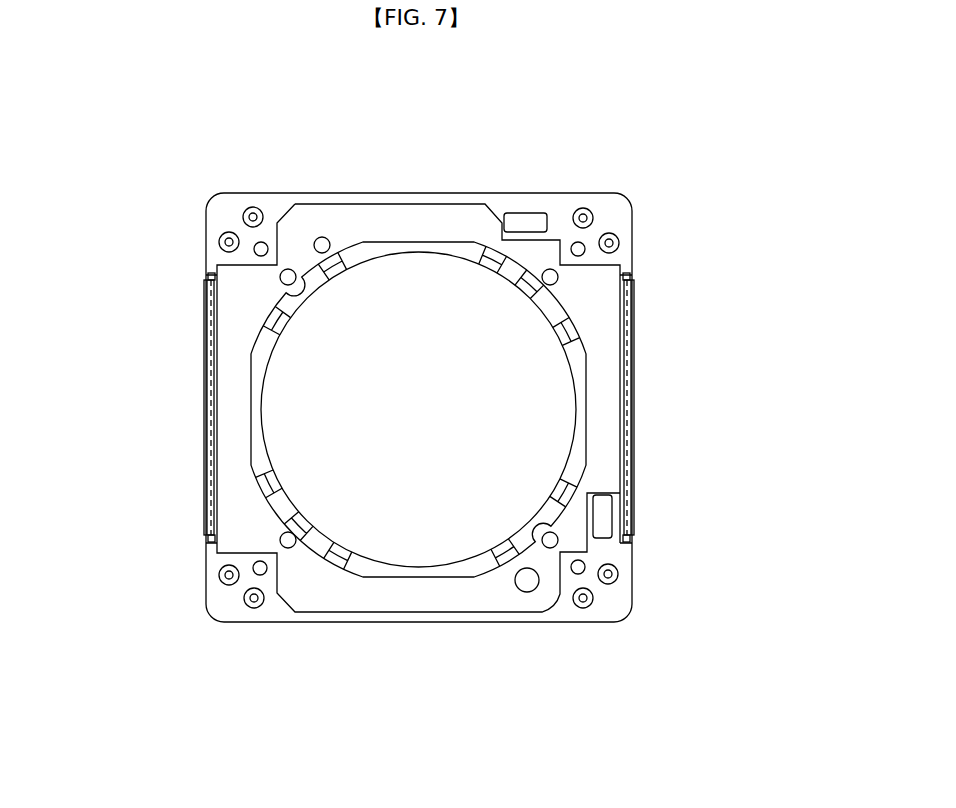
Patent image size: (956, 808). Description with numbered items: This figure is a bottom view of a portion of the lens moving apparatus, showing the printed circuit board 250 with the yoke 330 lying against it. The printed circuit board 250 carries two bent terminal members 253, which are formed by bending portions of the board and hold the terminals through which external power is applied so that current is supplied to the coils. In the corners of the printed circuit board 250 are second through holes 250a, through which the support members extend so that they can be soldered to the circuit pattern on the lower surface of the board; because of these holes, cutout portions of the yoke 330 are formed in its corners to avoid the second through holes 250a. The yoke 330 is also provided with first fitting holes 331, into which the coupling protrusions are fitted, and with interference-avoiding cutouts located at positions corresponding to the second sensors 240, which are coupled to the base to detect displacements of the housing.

The second sensor 240 is at (540, 215).
The printed circuit board 250 is at (528, 205).
The second through hole 250a is at (252, 208).
The terminal member 253 is at (205, 333).
The yoke 330 is at (378, 597).
The first fitting hole 331 is at (290, 270).